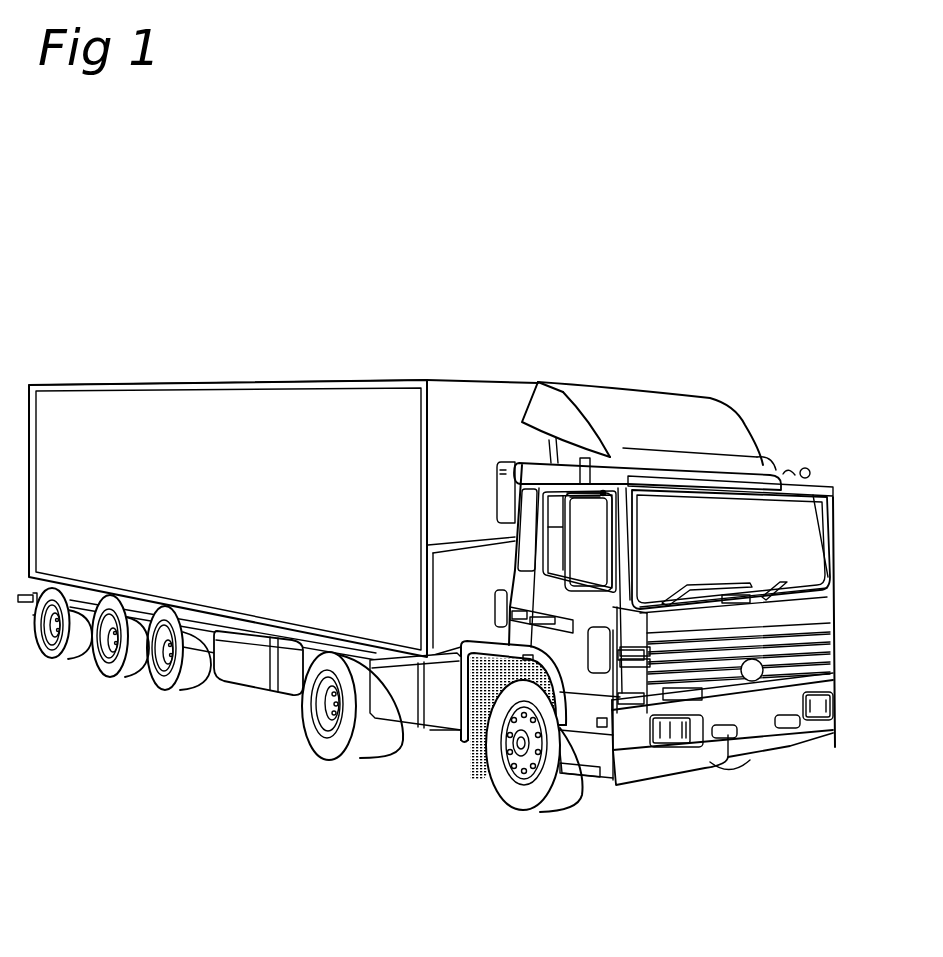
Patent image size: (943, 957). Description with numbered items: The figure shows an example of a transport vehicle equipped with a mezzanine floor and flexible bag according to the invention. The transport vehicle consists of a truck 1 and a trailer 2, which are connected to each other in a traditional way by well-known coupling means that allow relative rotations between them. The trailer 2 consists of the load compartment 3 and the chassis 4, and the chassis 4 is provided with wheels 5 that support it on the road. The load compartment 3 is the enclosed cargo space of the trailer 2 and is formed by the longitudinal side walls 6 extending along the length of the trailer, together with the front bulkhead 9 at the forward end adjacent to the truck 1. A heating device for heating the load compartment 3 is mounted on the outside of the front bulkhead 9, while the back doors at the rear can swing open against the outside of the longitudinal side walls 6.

The truck 1 is at (788, 423).
The trailer 2 is at (396, 370).
The load compartment 3 is at (276, 415).
The chassis 4 is at (254, 652).
The wheels 5 is at (52, 648).
The longitudinal side walls 6 is at (213, 417).
The front bulkhead 9 is at (450, 412).